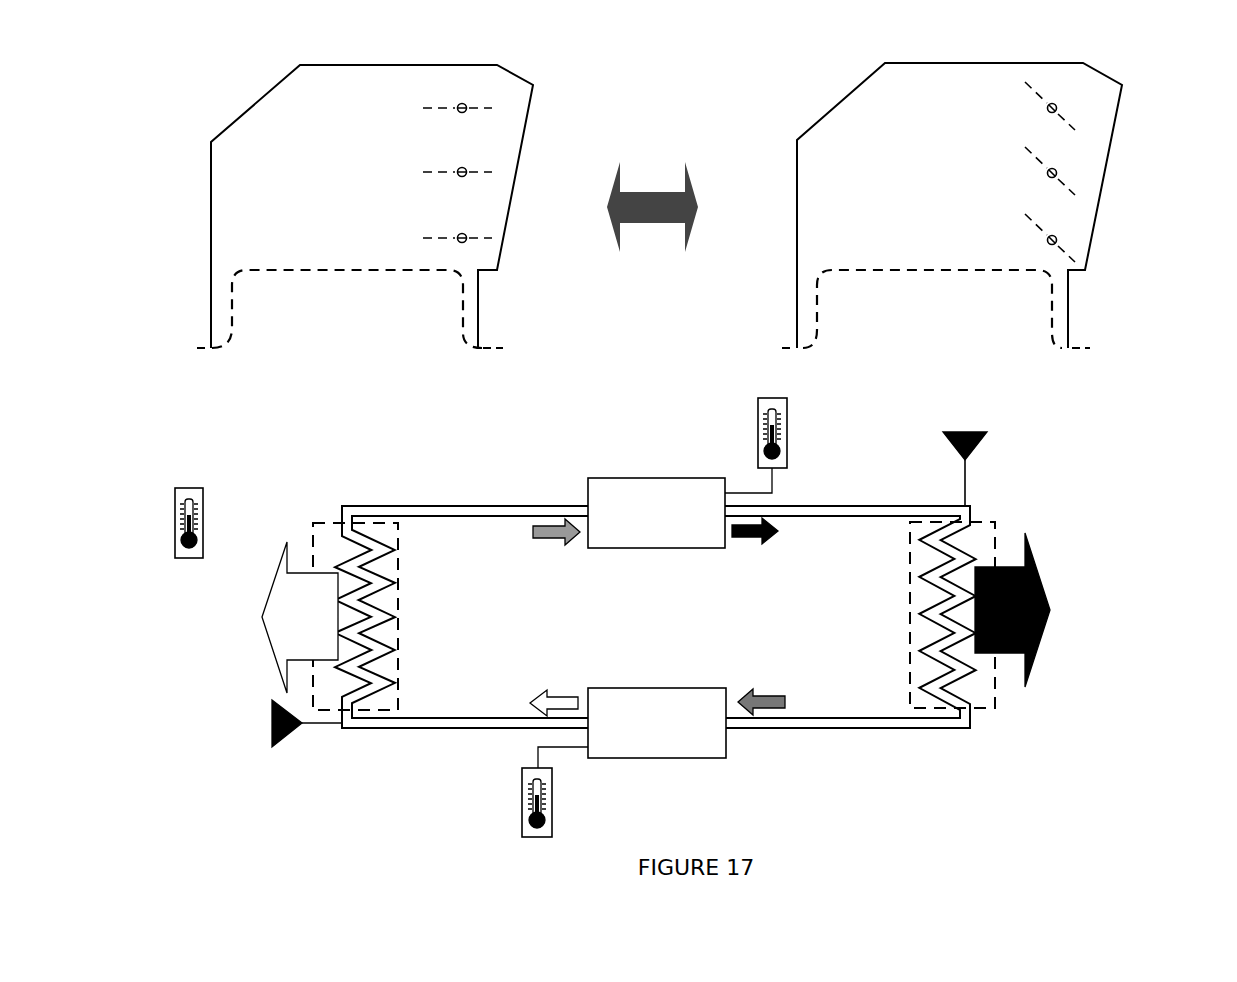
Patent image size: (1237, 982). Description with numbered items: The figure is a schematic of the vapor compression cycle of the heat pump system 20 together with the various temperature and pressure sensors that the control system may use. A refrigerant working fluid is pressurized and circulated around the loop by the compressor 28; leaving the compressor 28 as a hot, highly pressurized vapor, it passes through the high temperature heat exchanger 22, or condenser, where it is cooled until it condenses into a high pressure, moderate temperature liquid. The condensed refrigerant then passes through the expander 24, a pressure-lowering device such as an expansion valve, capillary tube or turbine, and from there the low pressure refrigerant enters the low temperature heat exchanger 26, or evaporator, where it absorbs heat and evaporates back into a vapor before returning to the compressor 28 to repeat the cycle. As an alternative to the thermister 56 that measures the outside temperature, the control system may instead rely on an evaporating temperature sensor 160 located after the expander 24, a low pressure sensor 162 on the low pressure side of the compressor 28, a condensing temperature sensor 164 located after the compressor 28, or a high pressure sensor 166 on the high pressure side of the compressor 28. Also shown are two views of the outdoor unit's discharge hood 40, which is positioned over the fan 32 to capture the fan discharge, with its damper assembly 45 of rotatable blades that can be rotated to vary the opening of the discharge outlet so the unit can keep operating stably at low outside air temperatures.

The heat pump system 20 is at (665, 620).
The high temperature heat exchanger 22 is at (313, 540).
The expander 24 is at (652, 478).
The low temperature heat exchanger 26 is at (982, 543).
The compressor 28 is at (627, 758).
The fan 32 is at (332, 270).
The discharge hood 40 is at (258, 100).
The damper assembly 45 is at (467, 127).
The thermister 56 is at (175, 508).
The evaporating temperature sensor 160 is at (787, 405).
The low pressure sensor 162 is at (980, 445).
The condensing temperature sensor 164 is at (522, 805).
The high pressure sensor 166 is at (280, 730).